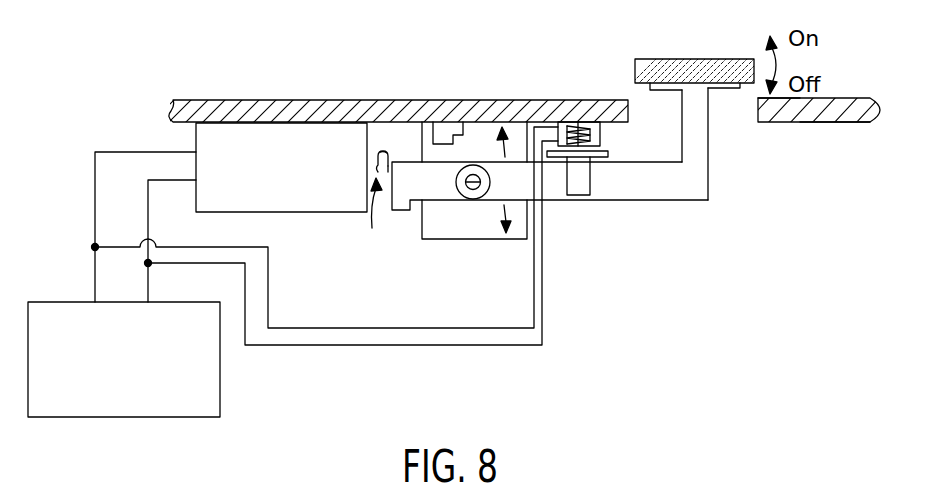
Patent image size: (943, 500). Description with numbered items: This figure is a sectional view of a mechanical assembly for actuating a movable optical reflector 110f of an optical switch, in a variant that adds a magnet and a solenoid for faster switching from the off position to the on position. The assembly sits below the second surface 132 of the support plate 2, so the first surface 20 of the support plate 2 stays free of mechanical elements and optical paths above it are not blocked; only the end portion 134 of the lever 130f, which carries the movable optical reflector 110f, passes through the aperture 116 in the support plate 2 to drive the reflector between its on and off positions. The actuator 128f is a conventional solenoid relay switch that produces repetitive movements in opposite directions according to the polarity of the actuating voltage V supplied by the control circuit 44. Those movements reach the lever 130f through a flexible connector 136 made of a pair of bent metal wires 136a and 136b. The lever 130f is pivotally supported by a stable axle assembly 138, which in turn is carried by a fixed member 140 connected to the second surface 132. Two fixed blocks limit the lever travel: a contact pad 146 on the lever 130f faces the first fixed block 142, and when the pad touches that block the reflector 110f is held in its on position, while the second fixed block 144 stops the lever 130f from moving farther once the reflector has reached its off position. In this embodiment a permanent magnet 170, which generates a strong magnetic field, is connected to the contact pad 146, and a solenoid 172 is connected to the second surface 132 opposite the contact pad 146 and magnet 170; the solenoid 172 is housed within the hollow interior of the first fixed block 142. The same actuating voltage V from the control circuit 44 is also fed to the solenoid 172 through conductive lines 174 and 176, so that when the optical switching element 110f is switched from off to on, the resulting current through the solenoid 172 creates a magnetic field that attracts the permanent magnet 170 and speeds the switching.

The support plate 2 is at (823, 107).
The first surface 20 is at (860, 98).
The control circuit 44 is at (150, 407).
The movable optical reflector 110f is at (703, 58).
The aperture 116 is at (650, 118).
The actuator 128f is at (300, 202).
The lever 130f is at (640, 198).
The second surface 132 is at (822, 120).
The end portion 134 is at (698, 145).
The flexible connector 136 is at (368, 205).
The bent metal wire 136a is at (384, 150).
The bent metal wire 136b is at (388, 170).
The axle assembly 138 is at (456, 182).
The fixed member 140 is at (473, 233).
The first fixed block 142 is at (600, 136).
The second fixed block 144 is at (452, 140).
The contact pad 146 is at (600, 160).
The magnet 170 is at (578, 190).
The solenoid 172 is at (577, 123).
The conductive line 174 is at (310, 325).
The conductive line 176 is at (320, 345).